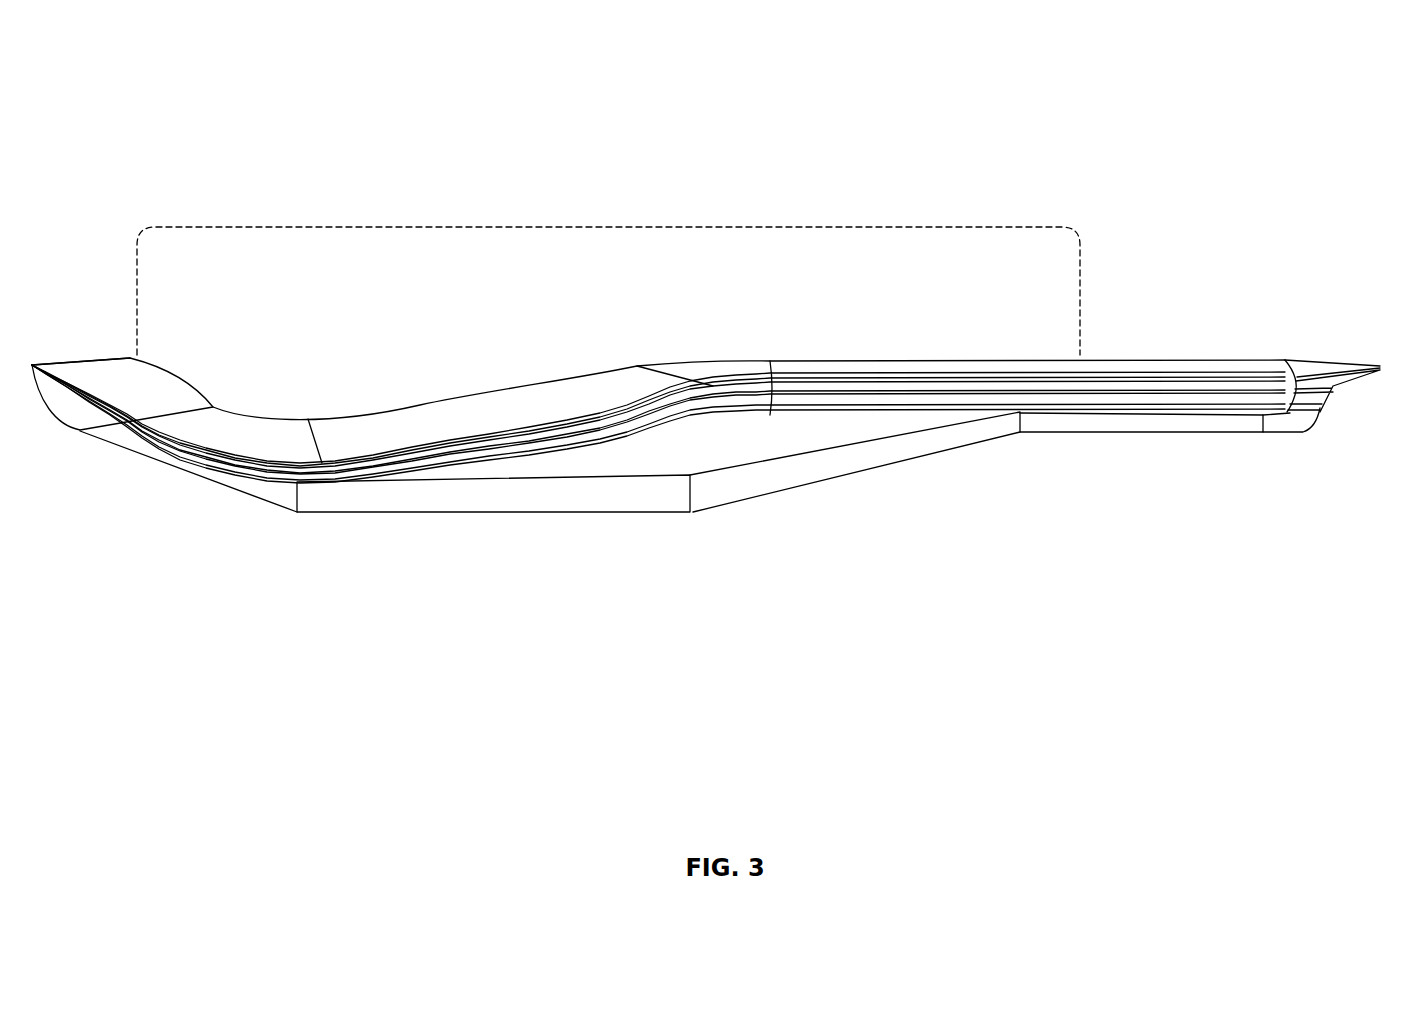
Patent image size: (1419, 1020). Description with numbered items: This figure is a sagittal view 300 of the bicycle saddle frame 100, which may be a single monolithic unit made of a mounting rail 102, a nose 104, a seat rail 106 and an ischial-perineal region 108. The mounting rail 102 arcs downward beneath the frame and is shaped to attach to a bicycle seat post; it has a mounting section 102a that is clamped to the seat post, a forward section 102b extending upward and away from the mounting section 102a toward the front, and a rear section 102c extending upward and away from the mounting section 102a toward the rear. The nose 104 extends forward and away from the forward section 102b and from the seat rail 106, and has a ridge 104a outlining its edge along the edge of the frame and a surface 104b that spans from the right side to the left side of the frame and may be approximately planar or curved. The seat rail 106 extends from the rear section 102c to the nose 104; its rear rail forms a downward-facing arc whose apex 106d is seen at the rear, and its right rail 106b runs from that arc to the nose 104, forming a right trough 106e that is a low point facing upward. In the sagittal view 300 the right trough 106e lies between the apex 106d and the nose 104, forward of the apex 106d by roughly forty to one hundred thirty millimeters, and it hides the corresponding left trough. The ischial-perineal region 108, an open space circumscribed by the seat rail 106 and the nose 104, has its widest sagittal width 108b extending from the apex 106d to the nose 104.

The sagittal view 300 is at (1322, 106).
The bicycle saddle frame 100 is at (118, 591).
The mounting rail 102 is at (676, 481).
The mounting section 102a is at (483, 514).
The forward section 102b is at (865, 470).
The rear section 102c is at (215, 492).
The nose 104 is at (1285, 338).
The ridge 104a is at (1380, 374).
The surface 104b is at (1205, 360).
The seat rail 106 is at (658, 459).
The right rail 106b is at (684, 417).
The apex 106d is at (100, 358).
The right trough 106e is at (309, 418).
The ischial-perineal region 108 is at (401, 384).
The widest sagittal width 108b is at (612, 227).